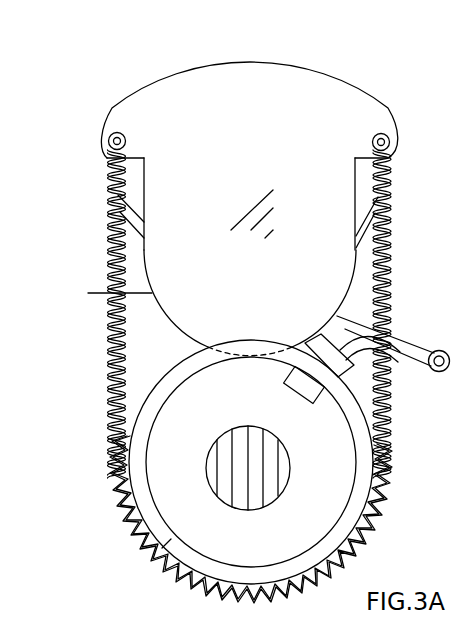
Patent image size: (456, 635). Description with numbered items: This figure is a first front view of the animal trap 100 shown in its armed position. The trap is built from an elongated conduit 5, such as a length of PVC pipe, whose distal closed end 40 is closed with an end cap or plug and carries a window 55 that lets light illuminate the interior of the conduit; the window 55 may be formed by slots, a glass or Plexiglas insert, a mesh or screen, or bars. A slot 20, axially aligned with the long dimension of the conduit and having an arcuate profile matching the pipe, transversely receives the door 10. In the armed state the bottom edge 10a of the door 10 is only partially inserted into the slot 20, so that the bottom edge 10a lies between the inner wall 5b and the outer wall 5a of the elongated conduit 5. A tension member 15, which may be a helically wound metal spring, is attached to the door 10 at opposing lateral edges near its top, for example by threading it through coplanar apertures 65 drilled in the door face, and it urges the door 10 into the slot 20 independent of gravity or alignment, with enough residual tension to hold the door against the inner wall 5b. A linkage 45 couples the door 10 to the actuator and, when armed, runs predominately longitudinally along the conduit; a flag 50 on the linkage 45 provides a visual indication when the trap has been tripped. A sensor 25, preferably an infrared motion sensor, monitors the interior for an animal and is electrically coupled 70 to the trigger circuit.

The animal trap 100 is at (110, 64).
The door 10 is at (305, 70).
The bottom edge of the door 10a is at (238, 354).
The coplanar apertures 65 is at (109, 139).
The linkage 45 is at (122, 212).
The flag 50 is at (105, 293).
The slot 20 is at (195, 352).
The electrical coupling 70 is at (443, 349).
The sensor 25 is at (313, 398).
The window 55 is at (218, 437).
The distal closed end 40 is at (335, 460).
The tension member 15 is at (375, 512).
The elongated conduit 5 is at (150, 558).
The outer wall 5a is at (112, 492).
The inner wall 5b is at (133, 533).